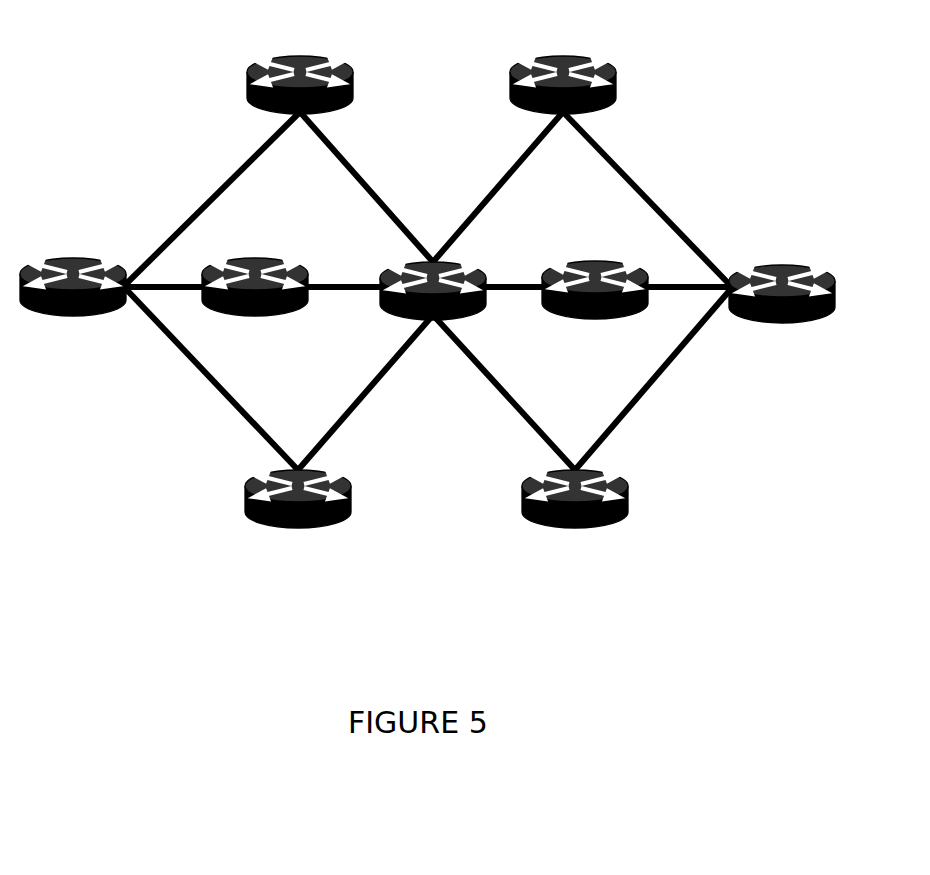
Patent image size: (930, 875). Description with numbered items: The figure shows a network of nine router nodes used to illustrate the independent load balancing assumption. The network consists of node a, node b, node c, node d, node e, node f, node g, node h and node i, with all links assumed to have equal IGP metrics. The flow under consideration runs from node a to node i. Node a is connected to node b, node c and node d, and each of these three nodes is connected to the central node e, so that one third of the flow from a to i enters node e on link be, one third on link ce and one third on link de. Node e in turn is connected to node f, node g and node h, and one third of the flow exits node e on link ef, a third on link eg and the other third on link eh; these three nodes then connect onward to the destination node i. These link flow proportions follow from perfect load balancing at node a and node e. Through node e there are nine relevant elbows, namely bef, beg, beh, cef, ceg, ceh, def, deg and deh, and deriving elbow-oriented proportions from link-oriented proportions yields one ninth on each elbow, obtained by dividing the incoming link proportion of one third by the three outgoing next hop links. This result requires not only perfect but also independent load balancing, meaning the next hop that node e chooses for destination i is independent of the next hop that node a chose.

The node a is at (97, 258).
The node b is at (314, 58).
The node c is at (273, 258).
The node d is at (320, 472).
The node e is at (452, 260).
The node f is at (573, 58).
The node g is at (603, 260).
The node h is at (602, 473).
The node i is at (793, 263).